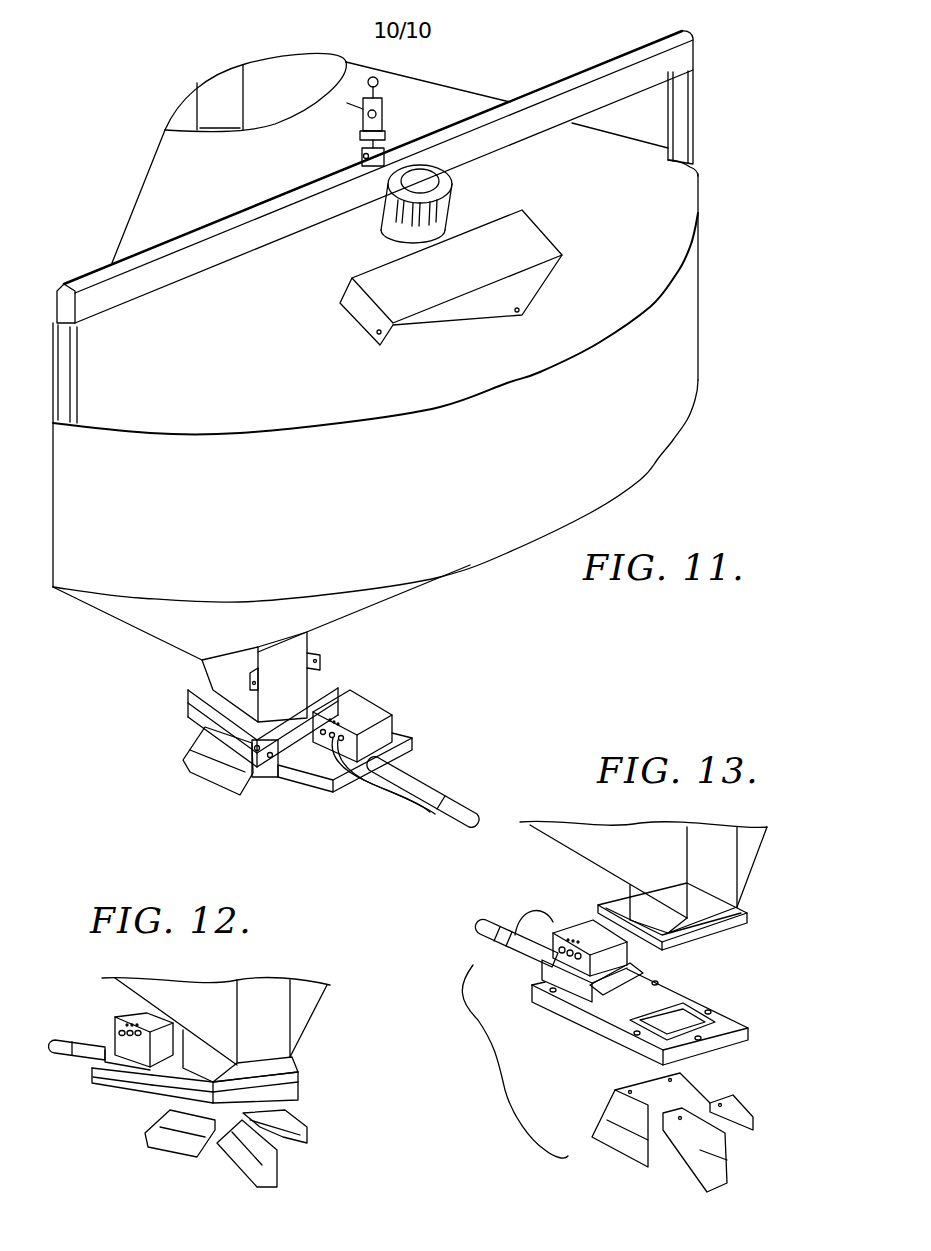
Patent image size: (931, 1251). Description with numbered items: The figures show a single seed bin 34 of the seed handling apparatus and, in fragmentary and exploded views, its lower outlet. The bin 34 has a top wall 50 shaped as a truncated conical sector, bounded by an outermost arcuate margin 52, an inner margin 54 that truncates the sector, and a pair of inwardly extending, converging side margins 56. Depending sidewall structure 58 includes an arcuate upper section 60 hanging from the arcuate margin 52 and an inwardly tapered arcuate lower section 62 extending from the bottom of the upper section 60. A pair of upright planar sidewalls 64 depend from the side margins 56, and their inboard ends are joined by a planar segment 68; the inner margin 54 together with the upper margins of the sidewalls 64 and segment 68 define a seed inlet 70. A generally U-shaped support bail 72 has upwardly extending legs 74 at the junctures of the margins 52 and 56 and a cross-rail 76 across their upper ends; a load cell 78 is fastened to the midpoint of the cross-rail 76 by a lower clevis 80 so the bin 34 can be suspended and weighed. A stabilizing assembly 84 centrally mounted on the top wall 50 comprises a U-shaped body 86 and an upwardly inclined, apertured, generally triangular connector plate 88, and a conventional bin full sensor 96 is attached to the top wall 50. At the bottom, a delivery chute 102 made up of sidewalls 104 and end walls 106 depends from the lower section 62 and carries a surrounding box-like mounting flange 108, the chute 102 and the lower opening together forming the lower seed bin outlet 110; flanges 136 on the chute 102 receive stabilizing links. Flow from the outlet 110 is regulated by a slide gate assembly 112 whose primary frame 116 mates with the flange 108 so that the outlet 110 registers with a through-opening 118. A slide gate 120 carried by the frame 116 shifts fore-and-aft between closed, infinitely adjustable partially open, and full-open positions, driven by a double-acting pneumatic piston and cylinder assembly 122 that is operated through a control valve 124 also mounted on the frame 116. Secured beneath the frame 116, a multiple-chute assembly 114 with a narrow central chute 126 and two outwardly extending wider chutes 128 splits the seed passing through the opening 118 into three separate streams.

In FIG. 11, the bin 34 is at (413, 336).
In FIG. 12, the bin 34 is at (201, 1000).
In FIG. 13, the bin 34 is at (636, 853).
In FIG. 11, the top wall 50 is at (673, 190).
In FIG. 11, the outermost arcuate margin 52 is at (515, 383).
In FIG. 11, the inner margin 54 is at (297, 112).
In FIG. 11, the side margins 56 is at (133, 207).
In FIG. 11, the sidewall structure 58 is at (707, 293).
In FIG. 11, the arcuate upper section 60 is at (680, 357).
In FIG. 11, the arcuate lower section 62 is at (150, 625).
In FIG. 11, the sidewalls 64 is at (187, 107).
In FIG. 12, the sidewalls 64 is at (187, 987).
In FIG. 13, the sidewalls 64 is at (603, 828).
In FIG. 11, the planar segment 68 is at (220, 83).
In FIG. 12, the planar segment 68 is at (270, 993).
In FIG. 13, the planar segment 68 is at (703, 837).
In FIG. 11, the seed inlet 70 is at (307, 67).
In FIG. 11, the support bail 72 is at (375, 168).
In FIG. 11, the legs 74 is at (683, 115).
In FIG. 11, the cross-rail 76 is at (535, 125).
In FIG. 11, the load cell 78 is at (387, 120).
In FIG. 11, the lower clevis 80 is at (360, 150).
In FIG. 11, the stabilizing assembly 84 is at (340, 322).
In FIG. 11, the U-shaped body 86 is at (523, 230).
In FIG. 11, the connector plate 88 is at (523, 287).
In FIG. 11, the bin full sensor 96 is at (453, 200).
In FIG. 11, the delivery chute 102 is at (309, 664).
In FIG. 12, the delivery chute 102 is at (281, 1044).
In FIG. 13, the delivery chute 102 is at (712, 893).
In FIG. 11, the sidewalls 104 is at (223, 670).
In FIG. 12, the sidewalls 104 is at (200, 1053).
In FIG. 13, the sidewalls 104 is at (650, 907).
In FIG. 11, the end walls 106 is at (293, 653).
In FIG. 12, the end walls 106 is at (263, 1067).
In FIG. 13, the end walls 106 is at (713, 917).
In FIG. 11, the mounting flange 108 is at (190, 680).
In FIG. 12, the mounting flange 108 is at (300, 1082).
In FIG. 13, the mounting flange 108 is at (610, 897).
In FIG. 13, the lower seed bin outlet 110 is at (669, 930).
In FIG. 11, the slide gate assembly 112 is at (380, 758).
In FIG. 12, the slide gate assembly 112 is at (122, 1075).
In FIG. 13, the slide gate assembly 112 is at (593, 1023).
In FIG. 11, the multiple-chute assembly 114 is at (183, 779).
In FIG. 12, the multiple-chute assembly 114 is at (277, 1151).
In FIG. 13, the multiple-chute assembly 114 is at (654, 1138).
In FIG. 11, the primary frame 116 is at (310, 777).
In FIG. 12, the primary frame 116 is at (130, 1083).
In FIG. 13, the primary frame 116 is at (608, 1028).
In FIG. 13, the through-opening 118 is at (663, 1003).
In FIG. 13, the slide gate 120 is at (683, 1015).
In FIG. 11, the pneumatic piston and cylinder assembly 122 is at (430, 792).
In FIG. 12, the pneumatic piston and cylinder assembly 122 is at (85, 1058).
In FIG. 13, the pneumatic piston and cylinder assembly 122 is at (517, 950).
In FIG. 11, the control valve 124 is at (383, 710).
In FIG. 12, the control valve 124 is at (140, 1017).
In FIG. 13, the control valve 124 is at (585, 927).
In FIG. 12, the central chute 126 is at (243, 1170).
In FIG. 13, the central chute 126 is at (713, 1173).
In FIG. 11, the wider chutes 128 is at (223, 770).
In FIG. 12, the wider chutes 128 is at (177, 1143).
In FIG. 13, the wider chutes 128 is at (627, 1143).
In FIG. 11, the flanges 136 is at (313, 653).